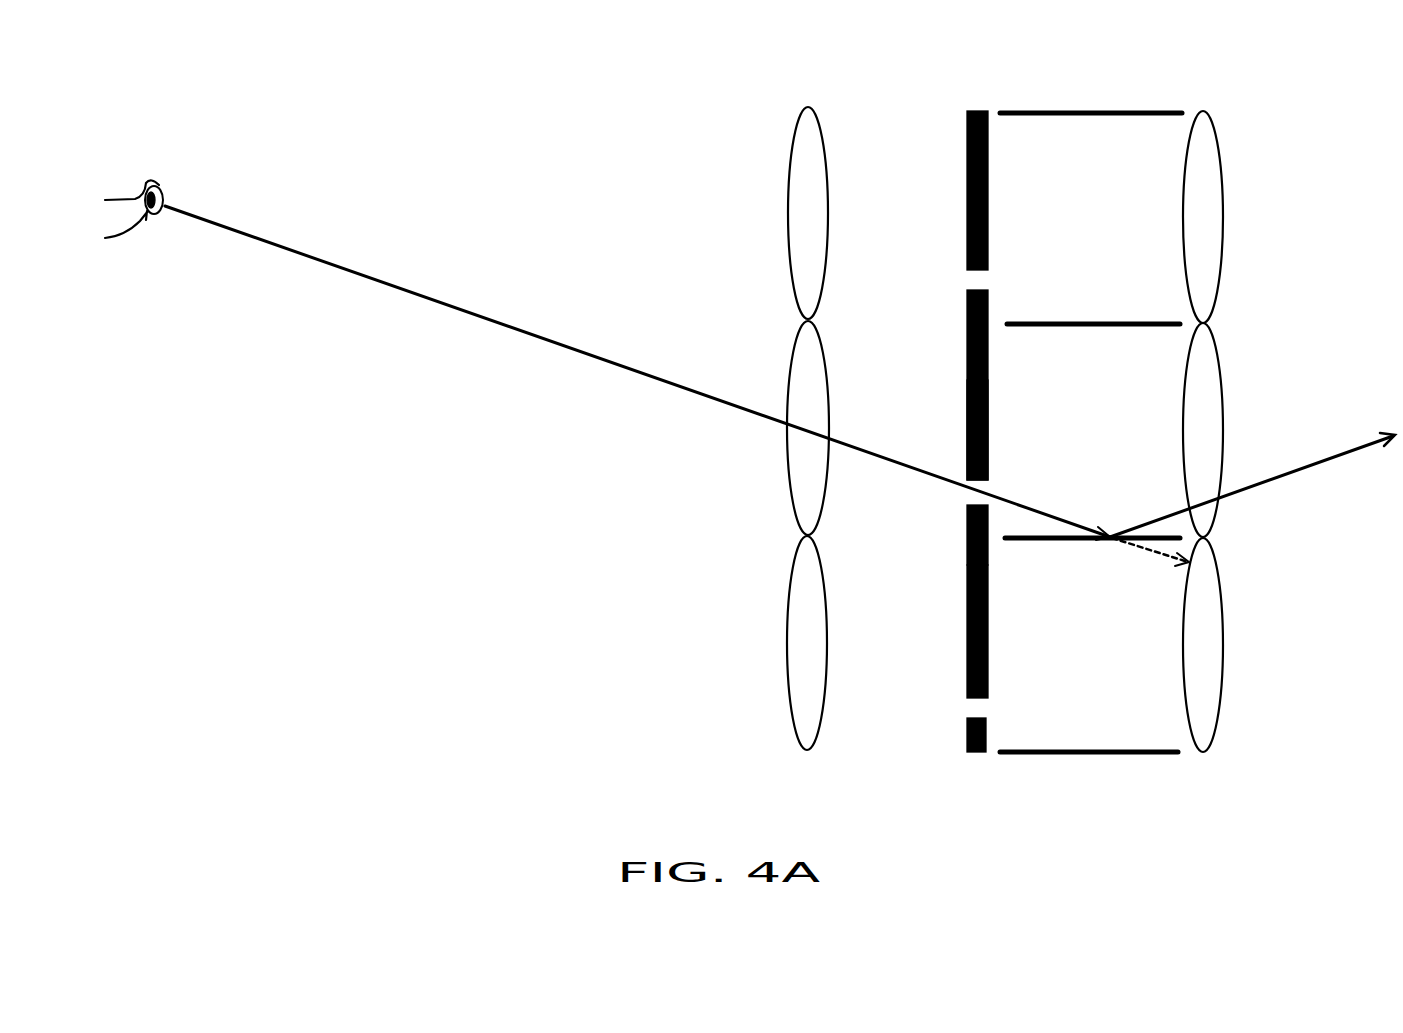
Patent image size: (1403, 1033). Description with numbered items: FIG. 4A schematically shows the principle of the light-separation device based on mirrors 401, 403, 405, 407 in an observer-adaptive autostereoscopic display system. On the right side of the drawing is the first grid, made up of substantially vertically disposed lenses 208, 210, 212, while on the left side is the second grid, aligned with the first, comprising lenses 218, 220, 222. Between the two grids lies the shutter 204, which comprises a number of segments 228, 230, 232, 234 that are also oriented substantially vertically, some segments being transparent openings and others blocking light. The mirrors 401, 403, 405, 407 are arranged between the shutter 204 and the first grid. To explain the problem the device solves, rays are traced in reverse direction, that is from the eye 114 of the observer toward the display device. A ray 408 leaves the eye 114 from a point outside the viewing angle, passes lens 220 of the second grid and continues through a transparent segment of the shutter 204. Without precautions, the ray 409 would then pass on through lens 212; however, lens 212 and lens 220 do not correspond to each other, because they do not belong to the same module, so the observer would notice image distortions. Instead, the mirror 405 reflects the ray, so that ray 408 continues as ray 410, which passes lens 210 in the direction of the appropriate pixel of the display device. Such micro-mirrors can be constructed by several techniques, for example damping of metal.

The eye 114 is at (138, 225).
The shutter 204 is at (975, 110).
The lens 208 is at (1210, 210).
The lens 210 is at (1215, 420).
The lens 212 is at (1212, 638).
The lens 218 is at (793, 209).
The lens 220 is at (803, 447).
The lens 222 is at (800, 629).
The segment 228 is at (967, 529).
The segment 230 is at (967, 493).
The segment 232 is at (965, 452).
The segment 234 is at (965, 400).
The mirror 401 is at (1100, 116).
The mirror 403 is at (1085, 327).
The mirror 405 is at (1064, 541).
The mirror 407 is at (1080, 755).
The ray 408 is at (850, 442).
The ray 409 is at (1157, 555).
The ray 410 is at (1243, 497).